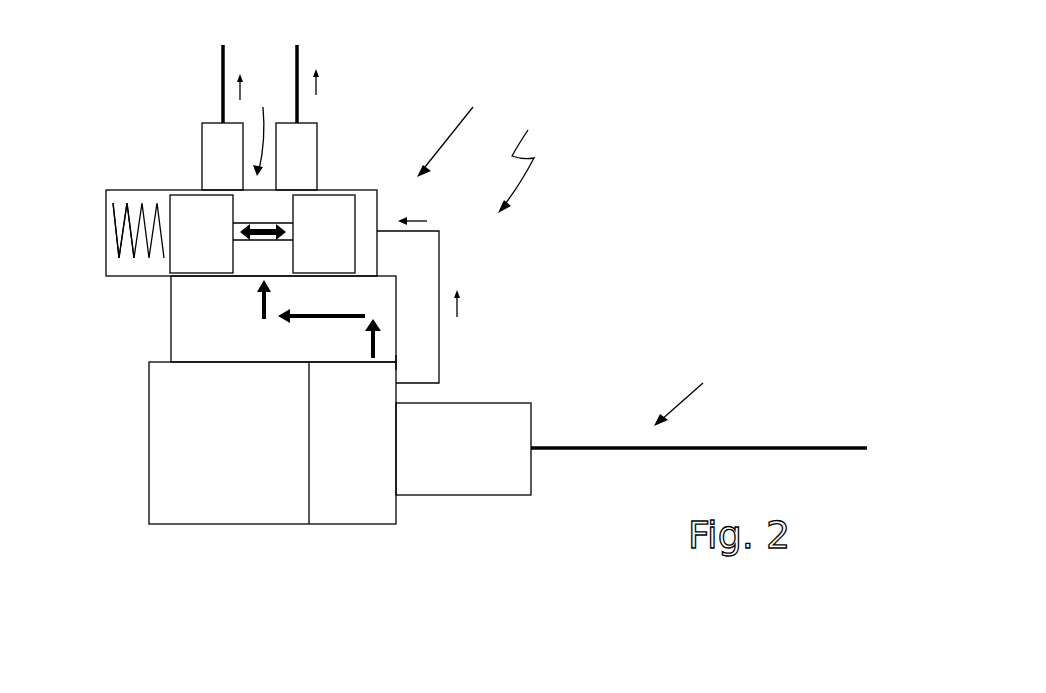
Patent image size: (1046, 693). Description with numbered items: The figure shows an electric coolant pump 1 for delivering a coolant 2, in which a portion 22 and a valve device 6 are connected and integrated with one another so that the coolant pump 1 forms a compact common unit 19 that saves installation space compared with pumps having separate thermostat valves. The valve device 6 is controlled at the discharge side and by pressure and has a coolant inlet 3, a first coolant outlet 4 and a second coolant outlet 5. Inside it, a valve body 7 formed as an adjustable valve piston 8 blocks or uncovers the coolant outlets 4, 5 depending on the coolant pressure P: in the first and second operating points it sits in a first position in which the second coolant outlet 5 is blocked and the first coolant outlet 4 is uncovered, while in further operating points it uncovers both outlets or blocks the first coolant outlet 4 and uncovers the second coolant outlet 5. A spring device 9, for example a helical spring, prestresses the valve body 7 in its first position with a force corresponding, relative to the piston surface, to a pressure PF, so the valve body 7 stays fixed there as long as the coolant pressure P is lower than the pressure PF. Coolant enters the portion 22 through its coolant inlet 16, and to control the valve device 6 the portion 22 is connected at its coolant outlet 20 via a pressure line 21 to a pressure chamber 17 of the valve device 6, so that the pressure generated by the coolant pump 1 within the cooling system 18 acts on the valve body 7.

The electric coolant pump 1 is at (537, 154).
The coolant 2 is at (692, 392).
The coolant inlet 3 is at (256, 281).
The first coolant outlet 4 is at (298, 117).
The second coolant outlet 5 is at (224, 121).
The valve device 6 is at (264, 121).
The valve body 7 is at (180, 258).
The valve piston 8 is at (180, 258).
The spring device 9 is at (134, 205).
The coolant inlet of the portion 16 is at (531, 443).
The pressure chamber 17 is at (365, 220).
The cooling system 18 is at (795, 447).
The common unit 19 is at (466, 118).
The coolant outlet 20 is at (405, 360).
The pressure line 21 is at (443, 258).
The portion 22 is at (263, 524).
The coolant pressure P is at (367, 222).
The spring pressure PF is at (127, 235).